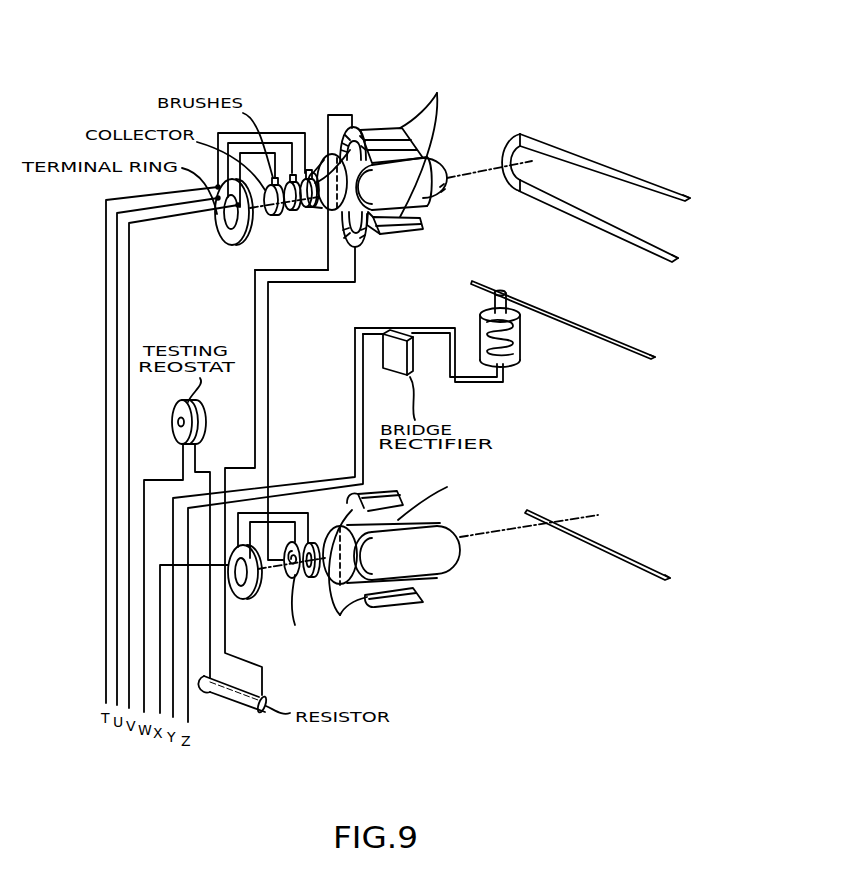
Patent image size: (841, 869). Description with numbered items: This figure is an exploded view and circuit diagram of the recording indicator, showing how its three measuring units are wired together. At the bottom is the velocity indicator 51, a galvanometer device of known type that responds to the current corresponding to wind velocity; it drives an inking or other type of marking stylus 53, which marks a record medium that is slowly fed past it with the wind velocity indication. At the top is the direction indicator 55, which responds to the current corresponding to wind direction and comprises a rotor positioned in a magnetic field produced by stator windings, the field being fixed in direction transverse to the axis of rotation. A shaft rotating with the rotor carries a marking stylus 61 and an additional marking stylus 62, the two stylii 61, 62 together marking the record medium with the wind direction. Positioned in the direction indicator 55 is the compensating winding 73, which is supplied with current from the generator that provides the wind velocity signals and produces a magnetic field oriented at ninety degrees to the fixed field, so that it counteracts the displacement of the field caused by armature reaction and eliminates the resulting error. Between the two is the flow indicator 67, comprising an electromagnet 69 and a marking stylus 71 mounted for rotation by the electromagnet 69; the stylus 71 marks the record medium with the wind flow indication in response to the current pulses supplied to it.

The compensating winding 73 is at (351, 128).
The direction indicator 55 is at (445, 156).
The marking stylus 61 is at (668, 210).
The additional marking stylus 62 is at (667, 247).
The marking stylus 71 is at (663, 330).
The flow indicator 67 is at (532, 346).
The electromagnet 69 is at (515, 362).
The marking stylus 53 is at (633, 562).
The velocity indicator 51 is at (435, 568).